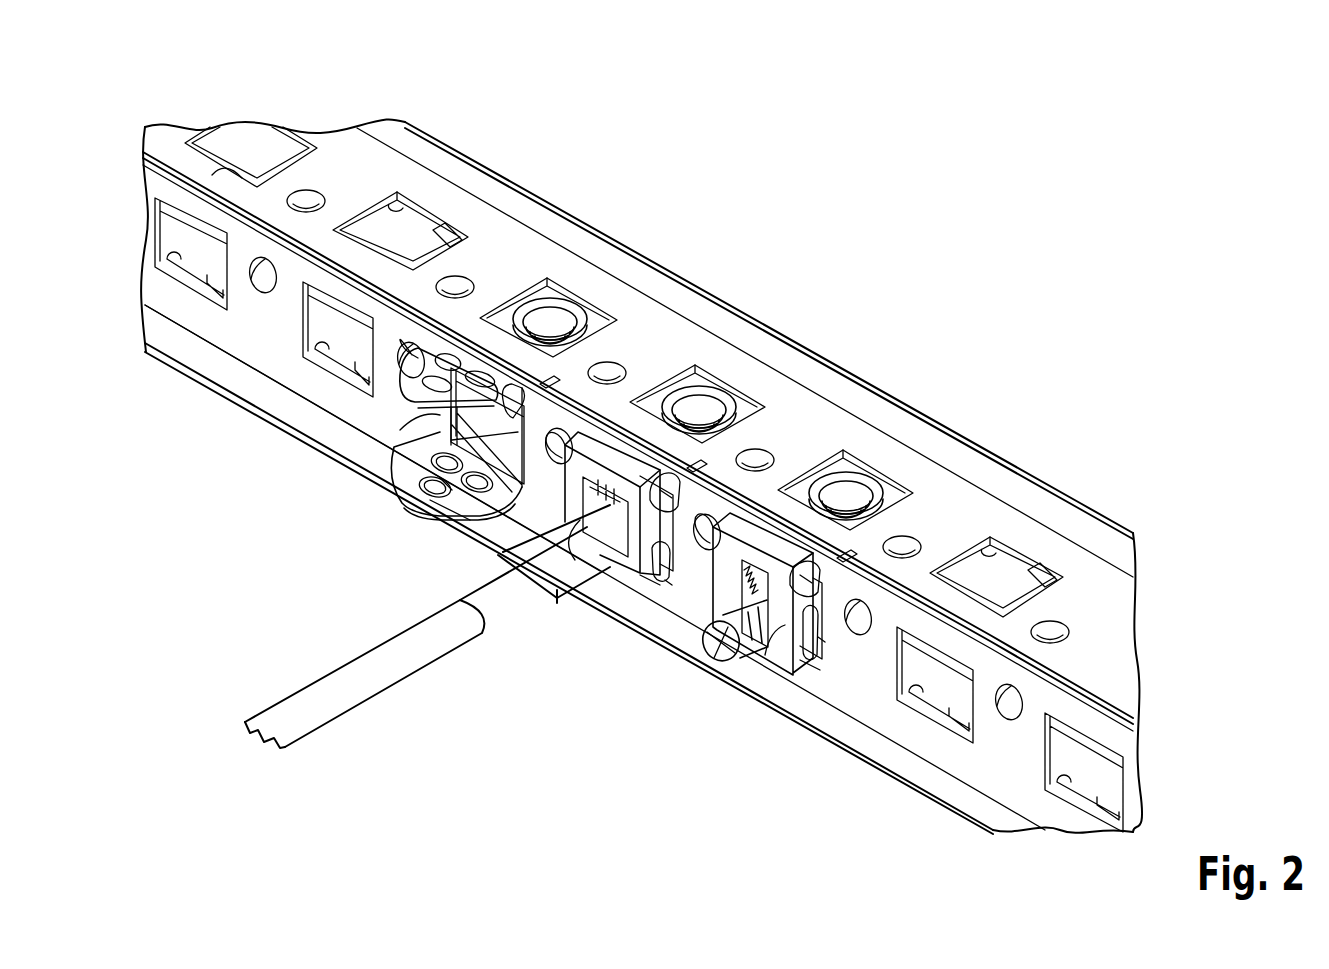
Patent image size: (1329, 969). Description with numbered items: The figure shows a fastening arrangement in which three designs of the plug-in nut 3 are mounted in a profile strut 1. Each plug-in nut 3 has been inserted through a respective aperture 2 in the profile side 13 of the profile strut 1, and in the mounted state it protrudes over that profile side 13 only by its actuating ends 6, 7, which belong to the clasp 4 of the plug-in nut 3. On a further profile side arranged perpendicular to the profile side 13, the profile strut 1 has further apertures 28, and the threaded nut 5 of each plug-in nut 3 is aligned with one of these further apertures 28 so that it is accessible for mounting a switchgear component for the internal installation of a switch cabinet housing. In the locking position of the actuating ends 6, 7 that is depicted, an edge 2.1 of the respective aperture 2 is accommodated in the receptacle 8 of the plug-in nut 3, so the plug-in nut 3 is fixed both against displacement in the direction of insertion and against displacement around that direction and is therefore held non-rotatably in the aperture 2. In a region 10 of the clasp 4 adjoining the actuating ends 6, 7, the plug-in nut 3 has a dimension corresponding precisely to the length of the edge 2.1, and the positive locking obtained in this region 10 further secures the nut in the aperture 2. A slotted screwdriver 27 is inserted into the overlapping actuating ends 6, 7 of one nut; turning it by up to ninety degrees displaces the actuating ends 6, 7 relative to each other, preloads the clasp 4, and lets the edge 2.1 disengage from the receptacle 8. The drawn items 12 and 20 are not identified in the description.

The profile strut 1 is at (948, 463).
The aperture 2 is at (165, 275).
The edge 2.1 is at (545, 383).
The plug-in nut 3 is at (453, 345).
The clasp 4 is at (455, 490).
The threaded nut 5 is at (580, 322).
The actuating end 6 is at (392, 425).
The actuating end 7 is at (440, 510).
The receptacle 8 is at (523, 410).
The region 10 is at (445, 478).
The longitudinal direction 12 is at (262, 342).
The profile side 13 is at (172, 335).
The screw 20 is at (737, 640).
The slotted screwdriver 27 is at (345, 685).
The further aperture 28 is at (205, 147).